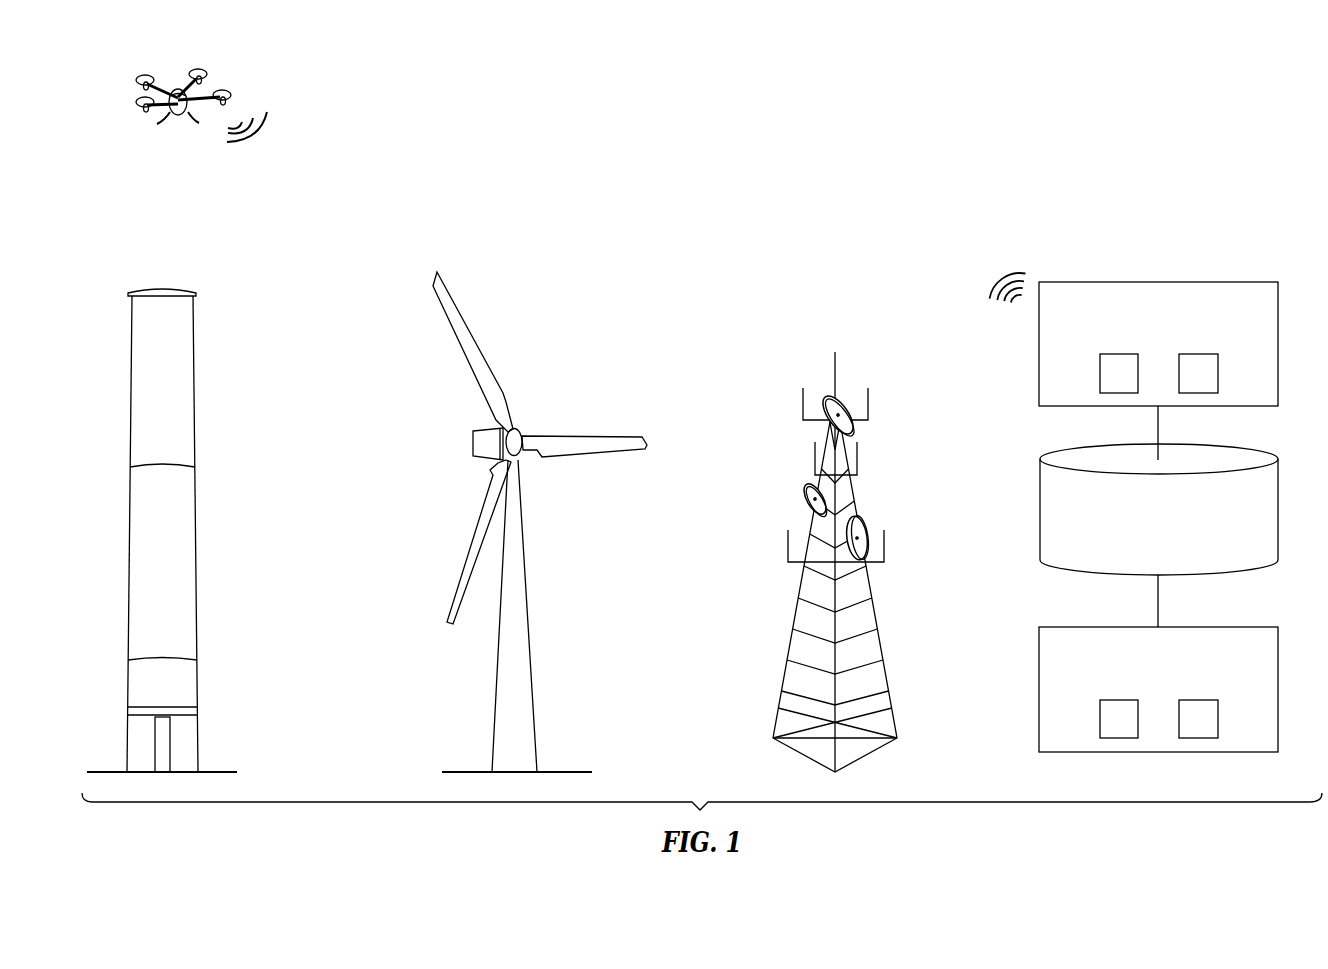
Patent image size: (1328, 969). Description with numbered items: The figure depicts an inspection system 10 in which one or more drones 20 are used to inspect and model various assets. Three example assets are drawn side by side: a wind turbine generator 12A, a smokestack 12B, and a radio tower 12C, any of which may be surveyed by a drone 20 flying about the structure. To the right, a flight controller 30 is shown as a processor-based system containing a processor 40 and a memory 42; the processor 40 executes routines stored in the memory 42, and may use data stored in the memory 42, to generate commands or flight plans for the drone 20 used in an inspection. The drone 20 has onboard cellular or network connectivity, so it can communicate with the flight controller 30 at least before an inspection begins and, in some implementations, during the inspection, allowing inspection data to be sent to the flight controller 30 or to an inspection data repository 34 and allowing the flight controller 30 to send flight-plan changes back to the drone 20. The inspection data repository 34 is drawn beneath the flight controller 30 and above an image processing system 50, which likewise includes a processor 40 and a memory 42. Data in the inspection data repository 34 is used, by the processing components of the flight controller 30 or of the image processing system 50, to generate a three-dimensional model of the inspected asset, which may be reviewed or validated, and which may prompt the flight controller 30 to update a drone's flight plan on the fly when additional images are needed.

The system 10 is at (956, 196).
The wind turbine generator 12A is at (548, 378).
The smokestack 12B is at (218, 254).
The radio tower 12C is at (878, 345).
The drone 20 is at (162, 151).
The flight controller 30 is at (1160, 282).
The inspection data repository 34 is at (1279, 508).
The processor 40 is at (1120, 355).
The memory 42 is at (1199, 355).
The image processing system 50 is at (1279, 691).